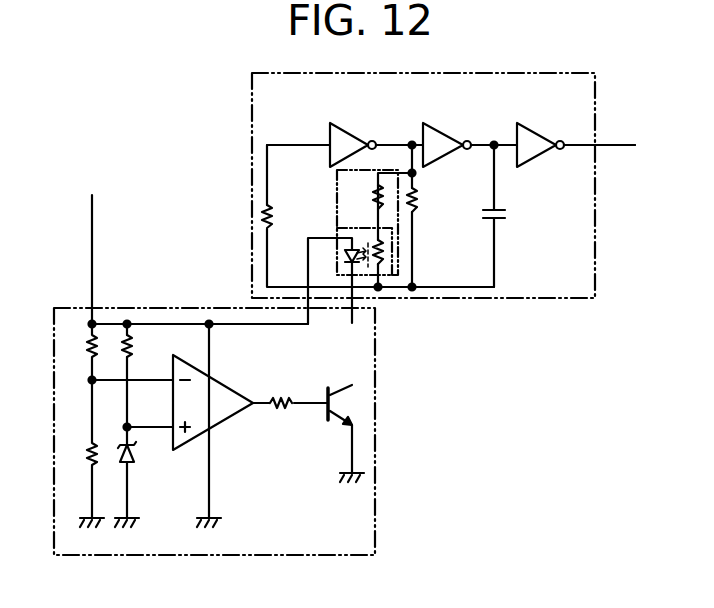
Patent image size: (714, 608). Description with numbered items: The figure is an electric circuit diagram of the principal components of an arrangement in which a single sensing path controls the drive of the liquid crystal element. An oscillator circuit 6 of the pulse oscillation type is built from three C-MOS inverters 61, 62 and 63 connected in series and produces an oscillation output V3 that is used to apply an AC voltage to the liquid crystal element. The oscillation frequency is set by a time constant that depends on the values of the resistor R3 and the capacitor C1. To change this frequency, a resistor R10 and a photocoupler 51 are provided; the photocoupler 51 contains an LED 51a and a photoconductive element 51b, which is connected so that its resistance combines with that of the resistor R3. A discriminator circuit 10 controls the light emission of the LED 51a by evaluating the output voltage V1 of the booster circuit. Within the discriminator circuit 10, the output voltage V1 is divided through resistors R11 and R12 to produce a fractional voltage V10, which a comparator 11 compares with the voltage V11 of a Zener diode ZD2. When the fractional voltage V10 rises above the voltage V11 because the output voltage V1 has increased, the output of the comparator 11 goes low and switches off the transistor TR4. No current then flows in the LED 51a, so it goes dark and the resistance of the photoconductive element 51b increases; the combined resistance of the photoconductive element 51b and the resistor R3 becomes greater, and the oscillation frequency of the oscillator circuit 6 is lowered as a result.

The oscillator circuit 6 is at (518, 73).
The inverter 61 is at (352, 131).
The inverter 62 is at (452, 131).
The inverter 63 is at (543, 131).
The oscillation output V3 is at (625, 145).
The resistor R3 is at (420, 200).
The resistor R10 is at (372, 196).
The capacitor C1 is at (505, 216).
The photocoupler 51 is at (385, 291).
The LED 51a is at (345, 241).
The photoconductive element 51b is at (392, 246).
The discriminator circuit 10 is at (377, 514).
The output voltage V1 is at (93, 223).
The resistor R11 is at (86, 351).
The fractional voltage V10 is at (95, 380).
The voltage of Zener diode V11 is at (128, 426).
The resistor R12 is at (88, 463).
The Zener diode ZD2 is at (133, 465).
The comparator 11 is at (222, 440).
The transistor TR4 is at (338, 422).